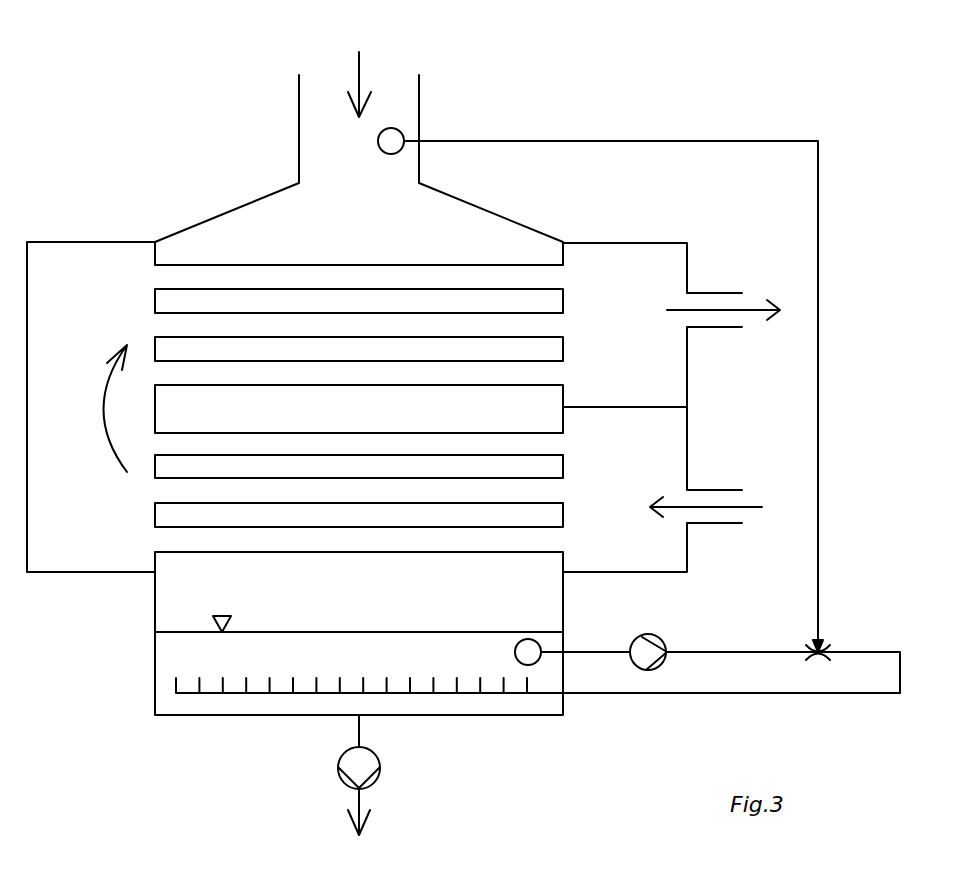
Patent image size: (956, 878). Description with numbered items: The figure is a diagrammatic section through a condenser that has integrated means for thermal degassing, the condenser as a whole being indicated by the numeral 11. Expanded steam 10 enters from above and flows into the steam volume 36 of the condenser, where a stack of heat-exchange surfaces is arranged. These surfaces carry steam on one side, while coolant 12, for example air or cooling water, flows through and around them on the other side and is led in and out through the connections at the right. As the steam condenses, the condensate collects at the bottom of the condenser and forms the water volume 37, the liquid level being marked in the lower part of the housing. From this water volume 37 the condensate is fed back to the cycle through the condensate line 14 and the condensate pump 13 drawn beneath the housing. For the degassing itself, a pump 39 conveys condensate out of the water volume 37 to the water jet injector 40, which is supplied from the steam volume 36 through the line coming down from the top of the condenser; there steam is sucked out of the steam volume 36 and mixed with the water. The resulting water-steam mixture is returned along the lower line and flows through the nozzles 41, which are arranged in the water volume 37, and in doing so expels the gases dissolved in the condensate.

The expanded steam 10 is at (362, 72).
The condenser apparatus 11 is at (175, 789).
The coolant 12 is at (710, 312).
The condensate pump 13 is at (382, 777).
The condensate line 14 is at (362, 732).
The steam volume 36 is at (334, 395).
The water volume 37 is at (359, 643).
The pump 39 is at (652, 635).
The water jet injector 40 is at (623, 394).
The nozzles 41 is at (222, 677).